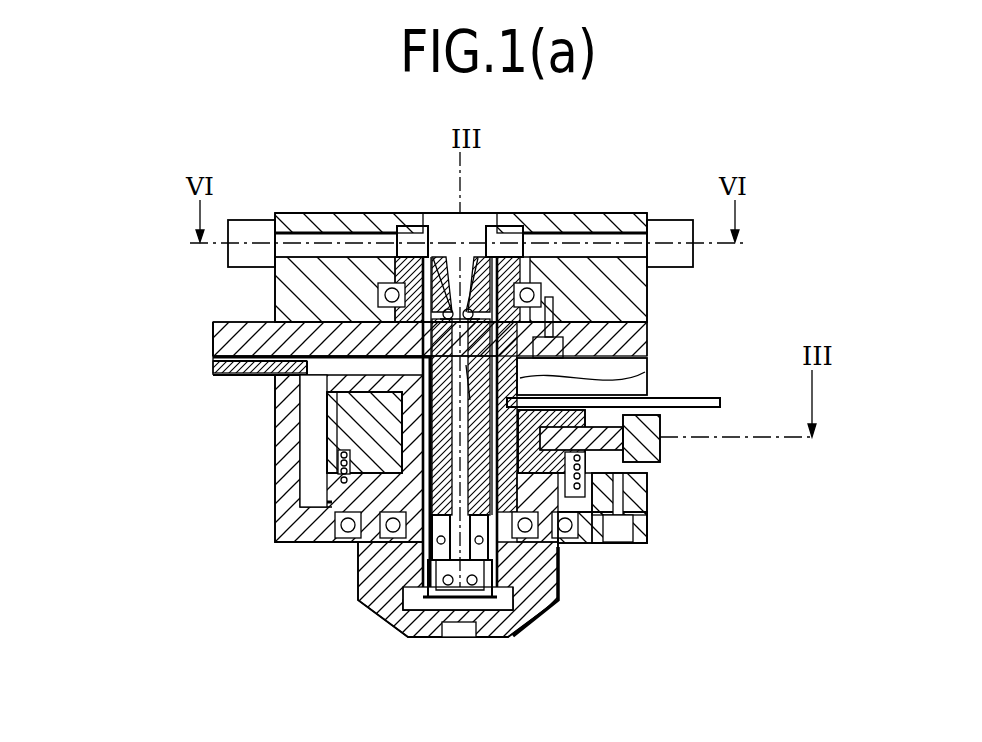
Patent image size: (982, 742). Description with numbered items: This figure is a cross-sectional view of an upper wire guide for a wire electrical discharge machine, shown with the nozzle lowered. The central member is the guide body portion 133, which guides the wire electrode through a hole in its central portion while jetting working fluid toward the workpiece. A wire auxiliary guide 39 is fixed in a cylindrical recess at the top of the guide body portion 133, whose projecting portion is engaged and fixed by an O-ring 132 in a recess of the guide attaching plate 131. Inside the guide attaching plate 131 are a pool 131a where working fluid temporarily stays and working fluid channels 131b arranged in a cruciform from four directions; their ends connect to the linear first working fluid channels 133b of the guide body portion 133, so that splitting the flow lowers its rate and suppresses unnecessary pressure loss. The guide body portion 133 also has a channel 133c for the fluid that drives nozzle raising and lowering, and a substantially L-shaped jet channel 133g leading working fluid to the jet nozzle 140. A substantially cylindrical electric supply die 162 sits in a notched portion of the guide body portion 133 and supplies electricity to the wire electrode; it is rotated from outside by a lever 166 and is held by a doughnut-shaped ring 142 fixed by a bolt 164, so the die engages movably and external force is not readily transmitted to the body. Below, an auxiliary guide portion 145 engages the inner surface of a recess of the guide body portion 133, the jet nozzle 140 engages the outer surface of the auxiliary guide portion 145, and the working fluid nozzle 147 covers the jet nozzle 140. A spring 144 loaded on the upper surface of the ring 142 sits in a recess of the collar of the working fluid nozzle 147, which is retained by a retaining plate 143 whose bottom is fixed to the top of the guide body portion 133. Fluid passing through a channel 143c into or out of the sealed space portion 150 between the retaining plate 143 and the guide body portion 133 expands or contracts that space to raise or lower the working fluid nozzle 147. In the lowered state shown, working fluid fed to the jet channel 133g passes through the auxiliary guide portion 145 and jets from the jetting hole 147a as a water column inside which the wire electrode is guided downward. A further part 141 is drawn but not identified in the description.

The wire auxiliary guide 39 is at (441, 224).
The guide attaching plate 131 is at (616, 198).
The pool 131a is at (497, 232).
The working fluid channels 131b is at (322, 213).
The O-ring 132 is at (527, 288).
The guide body portion 133 is at (213, 330).
The first working fluid channels 133b is at (428, 228).
The channel 133c is at (213, 368).
The jet channel 133g is at (213, 350).
The jet nozzle 140 is at (485, 630).
The lower block 141 is at (545, 538).
The ring 142 is at (345, 432).
The retaining plate 143 is at (290, 545).
The channel 143c is at (305, 392).
The spring 144 is at (333, 468).
The auxiliary guide portion 145 is at (538, 614).
The working fluid nozzle 147 is at (370, 608).
The jetting hole 147a is at (462, 637).
The sealed space portion 150 is at (332, 547).
The electric supply die 162 is at (585, 500).
The bolt 164 is at (660, 460).
The lever 166 is at (722, 403).